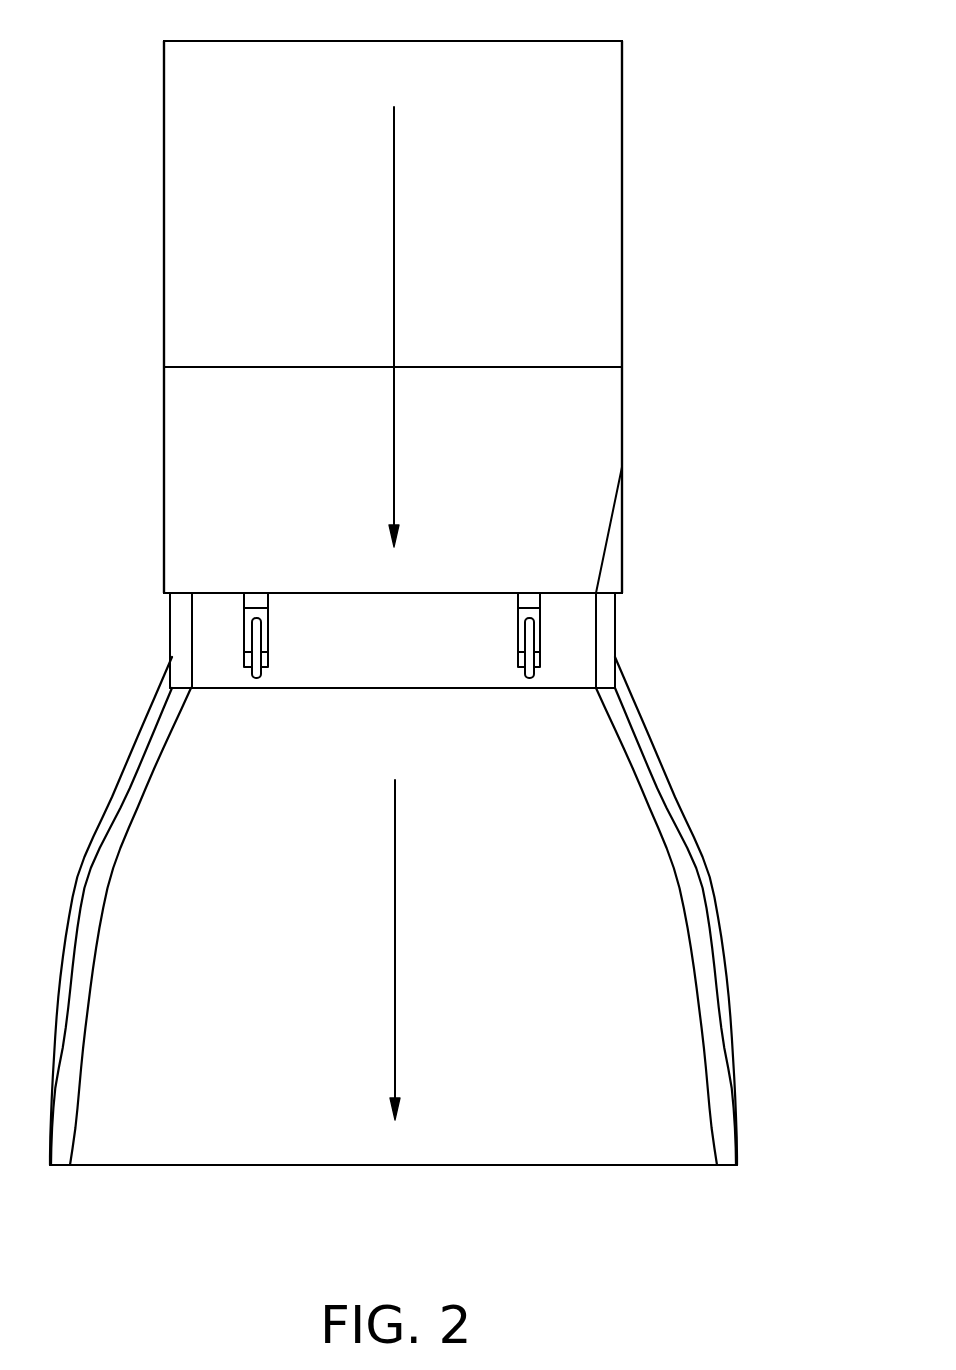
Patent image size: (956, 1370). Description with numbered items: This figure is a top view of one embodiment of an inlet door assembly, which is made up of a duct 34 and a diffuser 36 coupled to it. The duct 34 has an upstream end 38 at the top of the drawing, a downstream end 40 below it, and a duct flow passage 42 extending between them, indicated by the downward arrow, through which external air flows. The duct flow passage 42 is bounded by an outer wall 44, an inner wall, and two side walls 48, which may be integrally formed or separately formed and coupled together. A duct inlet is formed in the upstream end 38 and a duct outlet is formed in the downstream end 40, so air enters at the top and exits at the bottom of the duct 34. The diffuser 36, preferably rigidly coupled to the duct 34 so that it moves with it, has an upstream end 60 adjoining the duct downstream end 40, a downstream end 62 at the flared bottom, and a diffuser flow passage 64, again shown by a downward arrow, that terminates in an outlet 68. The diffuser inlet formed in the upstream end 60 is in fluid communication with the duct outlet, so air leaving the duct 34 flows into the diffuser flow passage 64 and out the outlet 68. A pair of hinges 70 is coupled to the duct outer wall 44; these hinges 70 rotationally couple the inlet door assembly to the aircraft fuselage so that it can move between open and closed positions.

The duct 34 is at (600, 173).
The diffuser 36 is at (650, 938).
The upstream end 38 is at (164, 41).
The downstream end 40 is at (164, 592).
The duct flow passage 42 is at (394, 252).
The outer wall 44 is at (312, 149).
The side walls 48 is at (164, 242).
The upstream end 60 is at (576, 593).
The downstream end 62 is at (740, 1165).
The diffuser flow passage 64 is at (395, 928).
The outlet 68 is at (350, 1167).
The hinges 70 is at (268, 645).